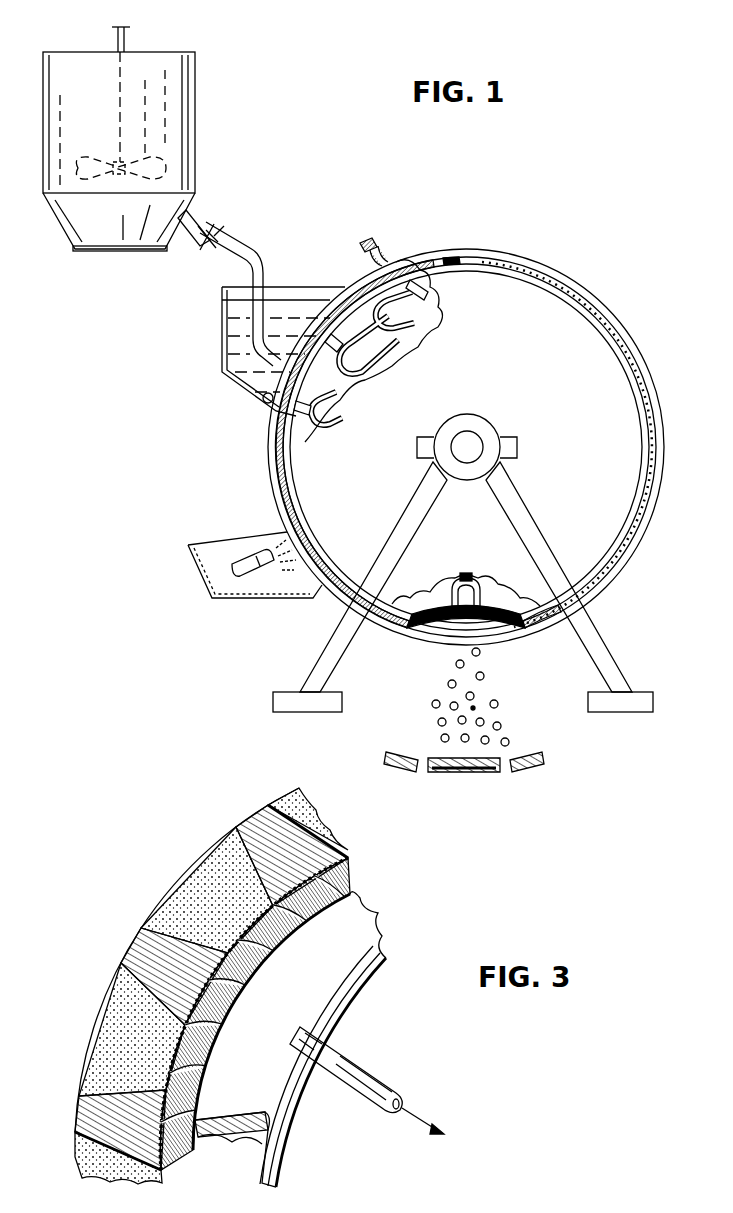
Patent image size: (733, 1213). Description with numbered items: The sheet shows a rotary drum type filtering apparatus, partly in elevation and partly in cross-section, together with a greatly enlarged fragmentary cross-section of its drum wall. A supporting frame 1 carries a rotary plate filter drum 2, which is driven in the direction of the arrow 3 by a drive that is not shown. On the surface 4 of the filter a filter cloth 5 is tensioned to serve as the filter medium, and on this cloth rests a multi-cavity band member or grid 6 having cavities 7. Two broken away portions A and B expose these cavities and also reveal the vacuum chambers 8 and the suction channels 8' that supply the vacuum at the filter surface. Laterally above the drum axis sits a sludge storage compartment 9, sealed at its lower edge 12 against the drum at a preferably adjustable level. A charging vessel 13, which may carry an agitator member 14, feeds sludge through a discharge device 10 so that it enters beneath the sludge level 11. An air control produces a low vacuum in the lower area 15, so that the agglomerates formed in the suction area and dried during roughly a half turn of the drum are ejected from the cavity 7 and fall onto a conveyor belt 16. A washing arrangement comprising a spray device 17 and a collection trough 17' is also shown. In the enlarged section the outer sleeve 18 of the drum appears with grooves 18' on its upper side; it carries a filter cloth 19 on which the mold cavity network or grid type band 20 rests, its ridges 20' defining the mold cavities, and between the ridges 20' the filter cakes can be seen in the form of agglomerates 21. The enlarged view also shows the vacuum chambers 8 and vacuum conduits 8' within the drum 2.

In FIG. 1, the supporting frame 1 is at (600, 654).
In FIG. 1, the rotary plate filter drum 2 is at (556, 294).
In FIG. 3, the rotary plate filter drum 2 is at (426, 1056).
In FIG. 1, the arrow 3 is at (663, 348).
In FIG. 1, the surface of the filter 4 is at (658, 404).
In FIG. 1, the filter cloth 5 is at (660, 460).
In FIG. 1, the multi-cavity band member or grid 6 is at (479, 248).
In FIG. 1, the cavities 7 is at (410, 257).
In FIG. 1, the vacuum chambers 8 is at (417, 474).
In FIG. 3, the vacuum chambers 8 is at (289, 1039).
In FIG. 1, the suction channels 8' is at (386, 363).
In FIG. 3, the suction channels 8' is at (367, 1086).
In FIG. 1, the sludge storage compartment 9 is at (228, 337).
In FIG. 1, the discharge device 10 is at (243, 252).
In FIG. 1, the sludge level 11 is at (222, 298).
In FIG. 1, the lower edge 12 is at (266, 402).
In FIG. 1, the charging vessel 13 is at (187, 76).
In FIG. 1, the agitator member 14 is at (165, 172).
In FIG. 1, the lower area 15 is at (490, 648).
In FIG. 1, the conveyor belt 16 is at (476, 776).
In FIG. 1, the spray device 17 is at (257, 540).
In FIG. 1, the collection trough 17' is at (226, 565).
In FIG. 3, the outer sleeve of the drum 18 is at (280, 1014).
In FIG. 3, the grooves 18' is at (271, 1022).
In FIG. 3, the filter cloth 19 is at (352, 858).
In FIG. 3, the mold cavity network (grid type band) 20 is at (178, 986).
In FIG. 3, the ridges 20' is at (131, 939).
In FIG. 3, the agglomerates 21 is at (214, 892).
In FIG. 1, the broken away portion A is at (420, 340).
In FIG. 1, the broken away portion B is at (452, 575).